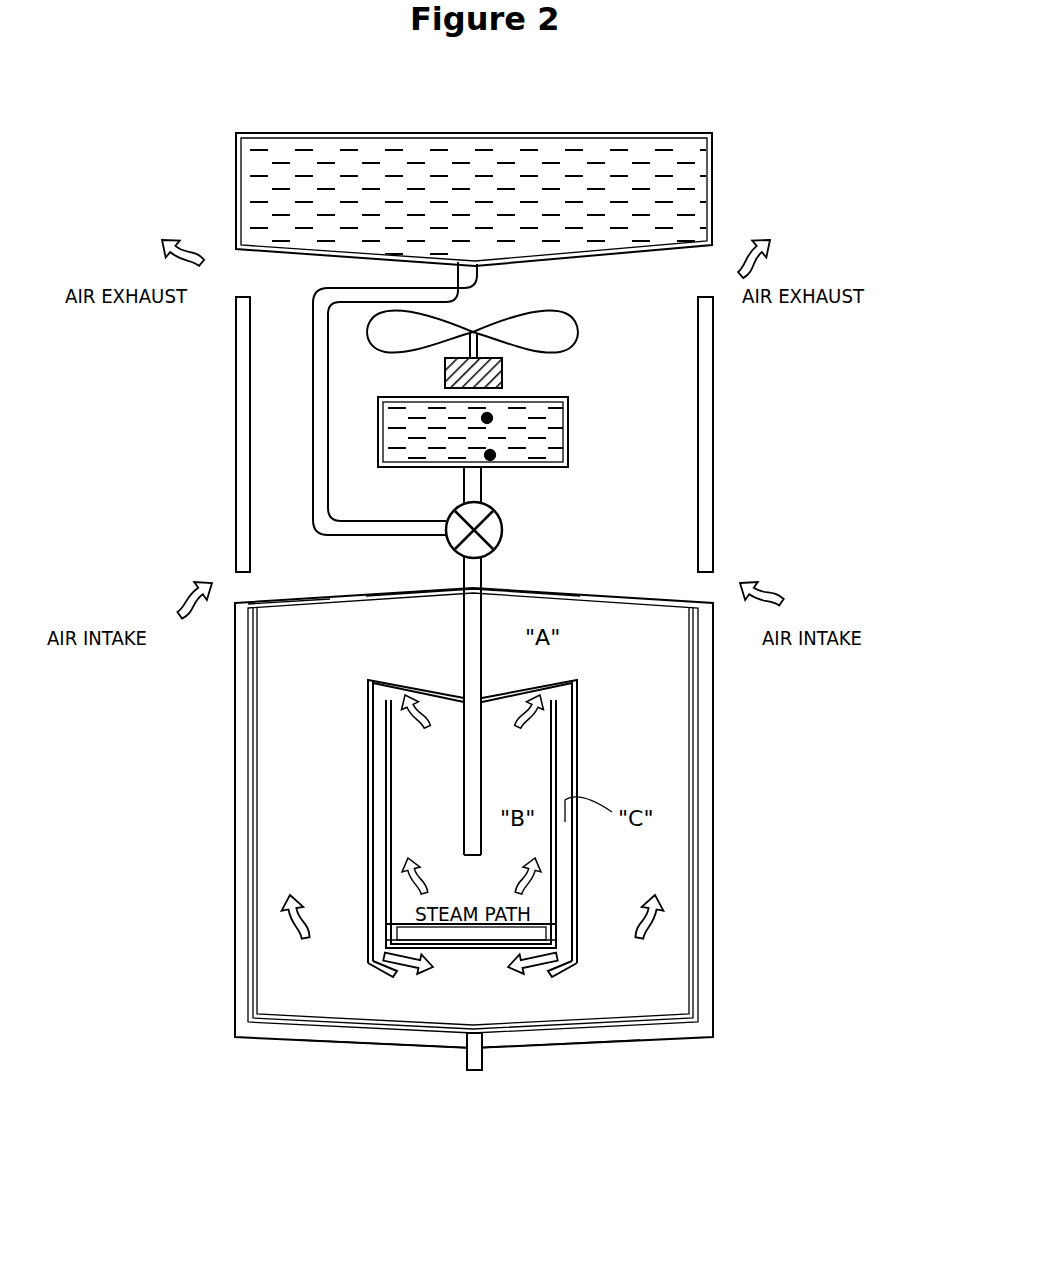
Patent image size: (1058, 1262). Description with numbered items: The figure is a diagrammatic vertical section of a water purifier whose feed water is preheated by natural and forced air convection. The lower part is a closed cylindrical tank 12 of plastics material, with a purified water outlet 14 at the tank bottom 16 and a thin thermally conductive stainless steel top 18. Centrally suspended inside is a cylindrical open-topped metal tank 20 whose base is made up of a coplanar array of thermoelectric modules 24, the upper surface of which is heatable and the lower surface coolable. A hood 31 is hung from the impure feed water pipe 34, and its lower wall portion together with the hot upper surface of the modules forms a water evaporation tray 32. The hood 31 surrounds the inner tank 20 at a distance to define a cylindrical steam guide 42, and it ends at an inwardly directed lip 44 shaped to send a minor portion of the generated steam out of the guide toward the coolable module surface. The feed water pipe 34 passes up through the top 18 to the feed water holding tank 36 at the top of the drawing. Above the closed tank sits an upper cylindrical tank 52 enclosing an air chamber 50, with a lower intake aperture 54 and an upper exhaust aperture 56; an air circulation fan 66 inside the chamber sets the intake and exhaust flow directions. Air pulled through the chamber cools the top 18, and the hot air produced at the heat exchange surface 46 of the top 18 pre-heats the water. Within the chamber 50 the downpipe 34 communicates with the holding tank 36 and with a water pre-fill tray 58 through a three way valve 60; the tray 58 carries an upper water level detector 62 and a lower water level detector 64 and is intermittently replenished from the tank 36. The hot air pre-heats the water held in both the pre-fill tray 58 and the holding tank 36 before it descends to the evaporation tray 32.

The closed cylindrical tank 12 is at (698, 710).
The purified water outlet 14 is at (462, 1063).
The tank bottom 16 is at (320, 1040).
The thin thermally conductive stainless steel top 18 is at (655, 597).
The cylindrical open-topped metal tank 20 is at (552, 779).
The thermoelectric modules 24 is at (493, 950).
The hood 31 is at (565, 848).
The water evaporation tray 32 is at (530, 930).
The impure feed water pipe 34 is at (463, 818).
The feed water holding tank 36 is at (718, 155).
The steam guide 42 is at (373, 790).
The inwardly directed lip 44 is at (370, 972).
The heat exchange surface 46 is at (308, 612).
The air chamber 50 is at (653, 371).
The upper cylindrical tank 52 is at (713, 357).
The lower intake aperture 54 is at (788, 629).
The upper exhaust aperture 56 is at (781, 255).
The water pre-fill tray 58 is at (567, 460).
The three way valve 60 is at (500, 520).
The upper water level detector 62 is at (487, 418).
The lower water level detector 64 is at (490, 455).
The air circulation fan 66 is at (578, 345).